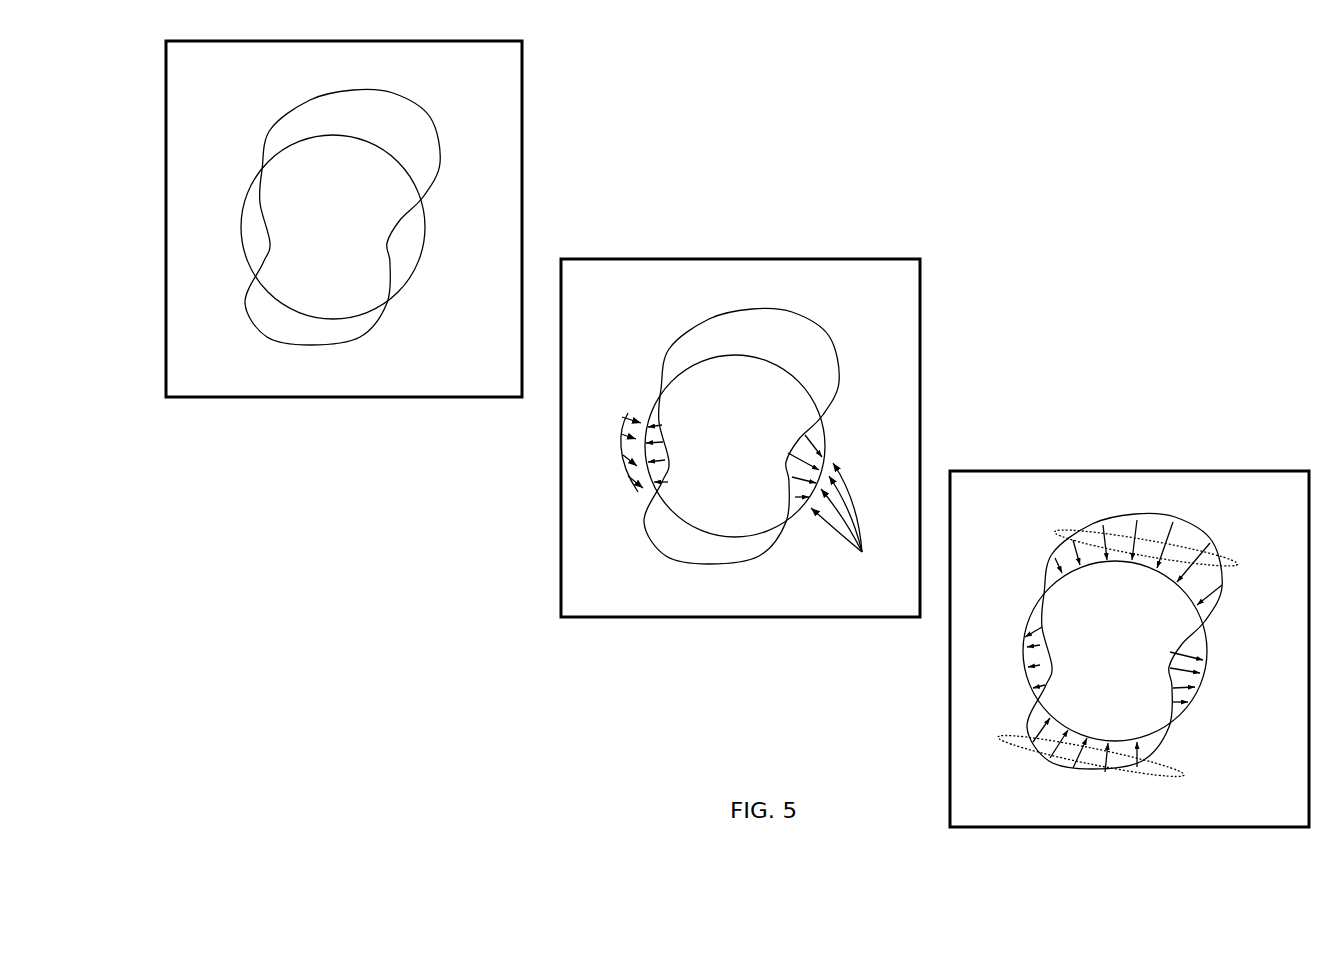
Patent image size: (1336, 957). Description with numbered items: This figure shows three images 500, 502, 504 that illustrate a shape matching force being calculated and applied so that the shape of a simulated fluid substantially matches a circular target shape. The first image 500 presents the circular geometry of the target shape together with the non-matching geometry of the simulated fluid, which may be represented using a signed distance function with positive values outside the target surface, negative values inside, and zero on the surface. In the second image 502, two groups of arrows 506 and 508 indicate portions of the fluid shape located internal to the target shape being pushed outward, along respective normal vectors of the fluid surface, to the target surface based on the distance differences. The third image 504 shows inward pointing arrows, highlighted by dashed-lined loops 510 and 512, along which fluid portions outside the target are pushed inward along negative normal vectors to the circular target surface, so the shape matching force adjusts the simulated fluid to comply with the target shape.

The image 500 is at (522, 113).
The image 502 is at (921, 326).
The image 504 is at (1200, 471).
The group of arrows 506 is at (628, 413).
The group of arrows 508 is at (862, 552).
The dashed-lined loop 510 is at (1053, 531).
The dashed-lined loop 512 is at (1008, 737).